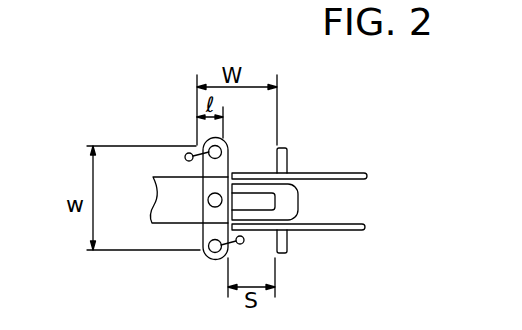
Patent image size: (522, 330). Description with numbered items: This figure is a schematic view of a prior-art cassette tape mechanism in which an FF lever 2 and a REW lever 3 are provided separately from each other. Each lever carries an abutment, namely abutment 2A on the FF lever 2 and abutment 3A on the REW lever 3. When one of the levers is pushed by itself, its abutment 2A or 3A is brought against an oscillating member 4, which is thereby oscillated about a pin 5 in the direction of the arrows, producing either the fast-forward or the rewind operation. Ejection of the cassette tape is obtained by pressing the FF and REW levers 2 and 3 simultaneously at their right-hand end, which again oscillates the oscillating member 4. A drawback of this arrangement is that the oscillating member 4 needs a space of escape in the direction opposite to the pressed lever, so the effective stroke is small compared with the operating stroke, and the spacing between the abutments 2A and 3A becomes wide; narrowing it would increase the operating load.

The FF lever 2 is at (352, 172).
The abutment 2A is at (288, 153).
The REW lever 3 is at (352, 230).
The abutment 3A is at (288, 240).
The oscillating member 4 is at (202, 254).
The pin 5 is at (208, 201).